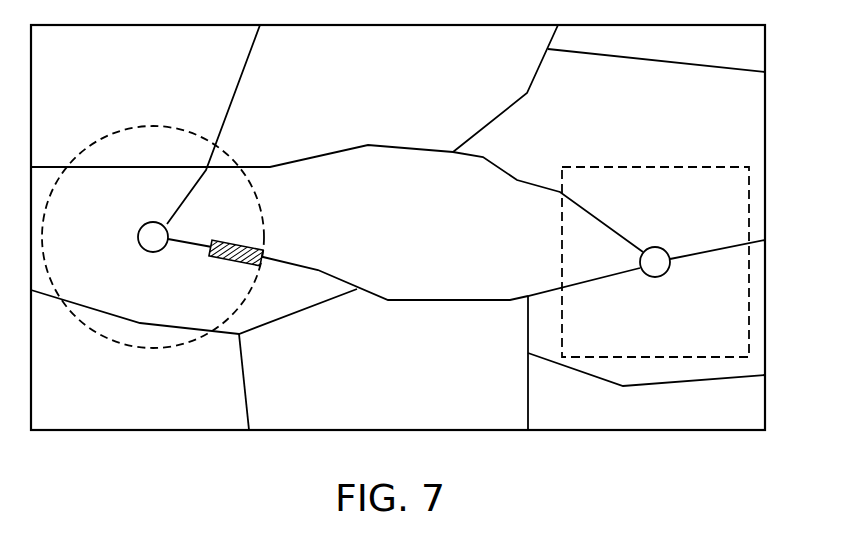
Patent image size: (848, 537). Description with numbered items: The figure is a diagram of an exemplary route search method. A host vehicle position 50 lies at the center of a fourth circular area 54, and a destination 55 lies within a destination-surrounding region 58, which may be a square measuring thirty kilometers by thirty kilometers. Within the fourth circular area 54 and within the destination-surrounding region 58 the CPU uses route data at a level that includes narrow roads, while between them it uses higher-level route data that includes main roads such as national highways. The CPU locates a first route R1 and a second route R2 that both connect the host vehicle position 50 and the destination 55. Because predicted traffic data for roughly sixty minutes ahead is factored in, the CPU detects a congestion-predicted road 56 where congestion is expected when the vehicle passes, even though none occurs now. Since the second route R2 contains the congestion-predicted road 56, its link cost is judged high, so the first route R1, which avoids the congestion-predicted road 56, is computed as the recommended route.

The host vehicle position 50 is at (145, 224).
The fourth circular area 54 is at (143, 126).
The destination 55 is at (654, 247).
The congestion-predicted road 56 is at (238, 241).
The destination-surrounding region 58 is at (632, 167).
The first route R1 is at (404, 148).
The second route R2 is at (441, 302).